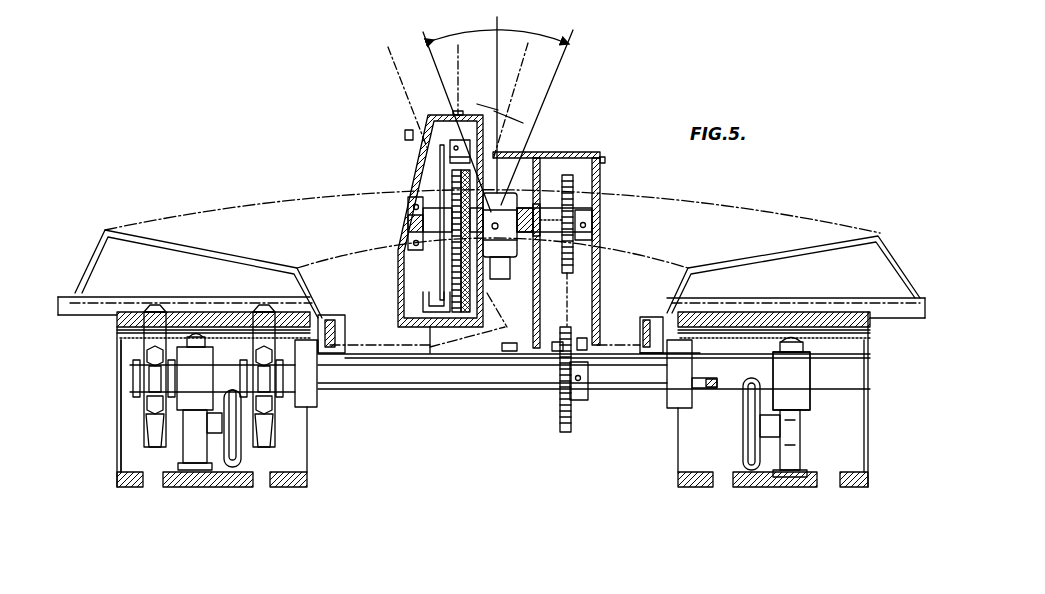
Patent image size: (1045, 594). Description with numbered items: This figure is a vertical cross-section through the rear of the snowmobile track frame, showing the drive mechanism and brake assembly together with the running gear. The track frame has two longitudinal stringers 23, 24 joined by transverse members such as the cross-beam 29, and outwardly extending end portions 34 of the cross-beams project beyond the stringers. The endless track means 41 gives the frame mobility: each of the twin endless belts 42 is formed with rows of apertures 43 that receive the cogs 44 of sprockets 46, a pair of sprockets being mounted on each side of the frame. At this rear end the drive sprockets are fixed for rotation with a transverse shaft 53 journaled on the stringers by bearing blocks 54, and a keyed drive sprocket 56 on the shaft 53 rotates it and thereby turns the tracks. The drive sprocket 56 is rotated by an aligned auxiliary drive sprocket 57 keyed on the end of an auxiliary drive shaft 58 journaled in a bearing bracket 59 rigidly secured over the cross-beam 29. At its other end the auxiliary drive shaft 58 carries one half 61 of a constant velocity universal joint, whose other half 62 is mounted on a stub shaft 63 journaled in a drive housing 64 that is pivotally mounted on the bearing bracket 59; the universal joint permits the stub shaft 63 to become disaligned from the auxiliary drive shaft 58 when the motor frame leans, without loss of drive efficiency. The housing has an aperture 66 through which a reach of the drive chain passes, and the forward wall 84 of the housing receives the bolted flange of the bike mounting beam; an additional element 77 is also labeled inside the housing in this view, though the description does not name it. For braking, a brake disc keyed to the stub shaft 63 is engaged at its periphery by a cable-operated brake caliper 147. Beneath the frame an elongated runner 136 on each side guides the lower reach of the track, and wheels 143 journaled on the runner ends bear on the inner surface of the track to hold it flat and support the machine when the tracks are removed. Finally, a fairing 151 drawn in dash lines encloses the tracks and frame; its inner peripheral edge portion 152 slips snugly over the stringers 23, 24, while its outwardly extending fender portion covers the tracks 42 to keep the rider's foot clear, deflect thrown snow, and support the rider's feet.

The stringer 23 is at (658, 375).
The stringer 24 is at (331, 318).
The cross-beam 29 is at (381, 352).
The end portion 34 is at (228, 340).
The endless track means 41 is at (216, 413).
The endless belt 42 is at (128, 470).
The apertures 43 is at (250, 484).
The cog 44 is at (158, 312).
The sprocket 46 is at (145, 352).
The shaft 53 is at (468, 380).
The bearing block 54 is at (318, 398).
The drive sprocket 56 is at (566, 432).
The auxiliary drive sprocket 57 is at (573, 190).
The auxiliary drive shaft 58 is at (550, 225).
The bearing bracket 59 is at (533, 343).
The universal joint half 61 is at (503, 205).
The universal joint half 62 is at (487, 255).
The stub shaft 63 is at (437, 200).
The drive housing 64 is at (398, 280).
The aperture 66 is at (452, 140).
The flange 77 is at (452, 270).
The forward wall 84 is at (428, 165).
The runner 136 is at (797, 455).
The wheel 143 is at (243, 457).
The brake caliper 147 is at (434, 343).
The fairing 151 is at (777, 212).
The inner peripheral edge portion 152 is at (631, 312).